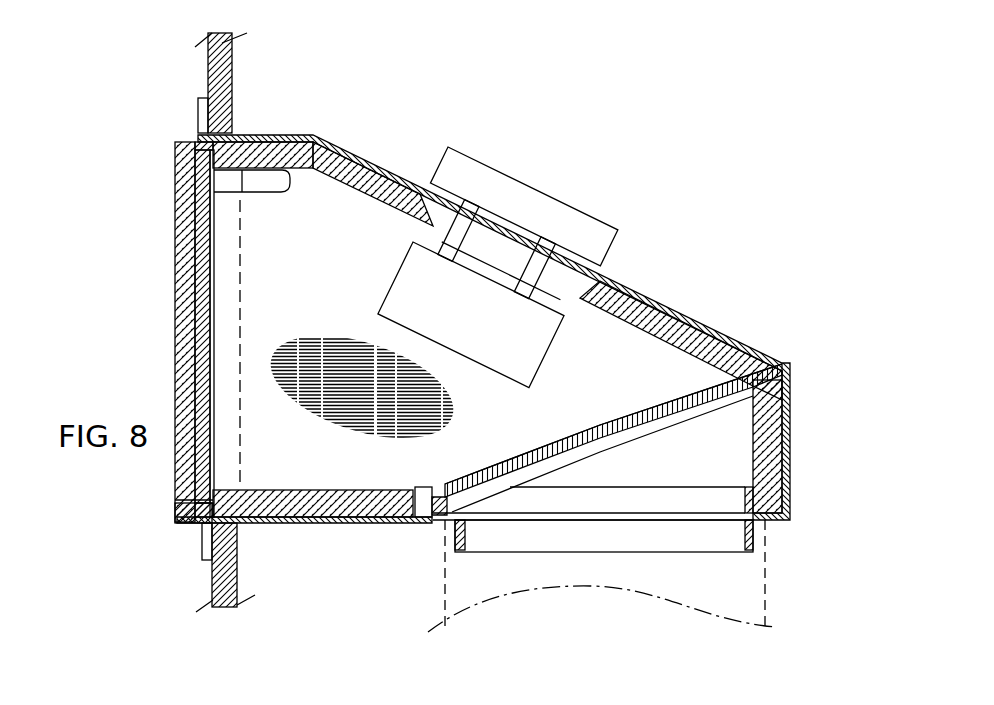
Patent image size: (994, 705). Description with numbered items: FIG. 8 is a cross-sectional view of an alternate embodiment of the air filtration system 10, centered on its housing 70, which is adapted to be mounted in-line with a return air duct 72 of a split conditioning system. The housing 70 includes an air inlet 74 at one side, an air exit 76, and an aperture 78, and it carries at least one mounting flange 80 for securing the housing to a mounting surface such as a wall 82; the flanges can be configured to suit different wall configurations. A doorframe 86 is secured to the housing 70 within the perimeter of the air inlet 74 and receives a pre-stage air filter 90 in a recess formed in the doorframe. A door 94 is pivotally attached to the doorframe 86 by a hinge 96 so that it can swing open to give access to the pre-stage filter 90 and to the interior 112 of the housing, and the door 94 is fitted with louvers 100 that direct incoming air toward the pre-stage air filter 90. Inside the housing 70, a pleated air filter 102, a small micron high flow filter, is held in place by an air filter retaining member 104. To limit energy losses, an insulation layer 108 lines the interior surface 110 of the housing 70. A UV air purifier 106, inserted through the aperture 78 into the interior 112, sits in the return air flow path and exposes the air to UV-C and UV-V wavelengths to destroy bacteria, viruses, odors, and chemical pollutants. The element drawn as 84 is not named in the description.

The air filtration system 10 is at (672, 168).
The housing 70 is at (668, 262).
The return air duct 72 is at (452, 592).
The air inlet 74 is at (183, 388).
The air exit 76 is at (705, 532).
The aperture 78 is at (464, 183).
The mounting flange 80 is at (198, 115).
The wall 82 is at (228, 72).
The base bracket 84 is at (592, 540).
The doorframe 86 is at (197, 138).
The pre-stage air filter 90 is at (177, 338).
The door 94 is at (175, 503).
The hinge 96 is at (200, 527).
The louvers 100 is at (177, 307).
The pleated air filter 102 is at (710, 390).
The air filter retaining member 104 is at (781, 352).
The UV air purifier 106 is at (533, 210).
The insulation layer 108 is at (353, 163).
The interior surface 110 is at (197, 188).
The interior 112 is at (306, 205).